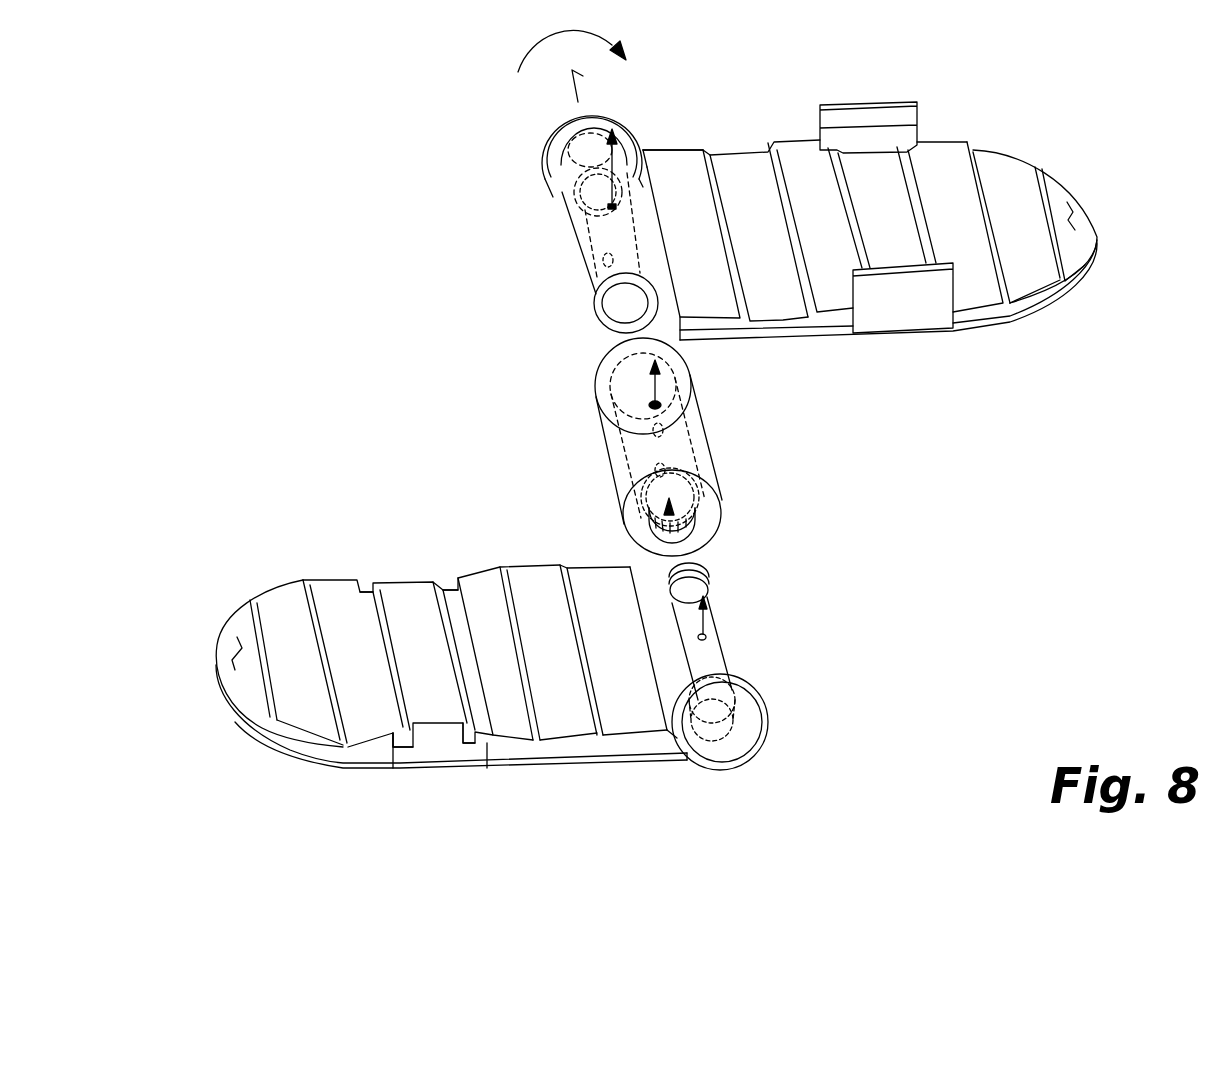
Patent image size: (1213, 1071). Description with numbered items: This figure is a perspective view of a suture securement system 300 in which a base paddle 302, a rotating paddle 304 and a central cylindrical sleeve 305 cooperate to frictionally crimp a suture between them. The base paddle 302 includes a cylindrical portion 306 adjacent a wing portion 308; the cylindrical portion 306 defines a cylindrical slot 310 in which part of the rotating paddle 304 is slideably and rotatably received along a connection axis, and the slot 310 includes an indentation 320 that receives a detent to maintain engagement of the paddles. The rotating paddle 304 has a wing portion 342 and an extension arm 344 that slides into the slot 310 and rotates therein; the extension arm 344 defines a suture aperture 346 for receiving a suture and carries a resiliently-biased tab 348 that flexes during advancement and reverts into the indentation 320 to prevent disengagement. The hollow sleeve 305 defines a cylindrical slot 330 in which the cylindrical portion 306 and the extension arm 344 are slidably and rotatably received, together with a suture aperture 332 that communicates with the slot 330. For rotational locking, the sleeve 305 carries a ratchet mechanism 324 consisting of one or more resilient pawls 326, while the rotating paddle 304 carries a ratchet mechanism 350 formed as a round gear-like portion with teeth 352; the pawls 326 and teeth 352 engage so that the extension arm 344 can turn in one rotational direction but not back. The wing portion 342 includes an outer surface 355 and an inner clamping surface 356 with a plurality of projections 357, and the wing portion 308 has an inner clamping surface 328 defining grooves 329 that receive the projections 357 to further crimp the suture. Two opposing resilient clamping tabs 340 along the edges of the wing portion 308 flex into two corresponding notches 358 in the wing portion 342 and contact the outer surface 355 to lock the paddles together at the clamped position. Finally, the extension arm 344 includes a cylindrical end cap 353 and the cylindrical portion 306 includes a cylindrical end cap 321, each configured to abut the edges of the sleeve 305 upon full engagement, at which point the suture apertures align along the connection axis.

The suture securement system 300 is at (830, 58).
The base paddle 302 is at (1102, 228).
The rotating paddle 304 is at (215, 680).
The central cylindrical sleeve 305 is at (595, 382).
The cylindrical portion 306 is at (575, 232).
The wing portion 308 is at (680, 150).
The cylindrical slot 310 is at (590, 278).
The indentation 320 is at (572, 195).
The cylindrical end cap 321 is at (1047, 312).
The ratchet mechanism 324 is at (658, 527).
The pawls 326 is at (648, 505).
The inner clamping surface 328 is at (1068, 200).
The grooves 329 is at (1003, 150).
The cylindrical slot 330 is at (692, 553).
The suture aperture 332 is at (662, 407).
The resilient clamping tabs 340 is at (918, 120).
The wing portion 342 is at (604, 762).
The extension arm 344 is at (712, 626).
The suture aperture 346 is at (707, 639).
The resiliently-biased tab 348 is at (706, 577).
The ratchet mechanism 350 is at (737, 688).
The teeth 352 is at (697, 695).
The cylindrical end cap 353 is at (741, 770).
The outer surface 355 is at (330, 762).
The inner clamping surface 356 is at (235, 640).
The projections 357 is at (293, 578).
The notches 358 is at (452, 585).